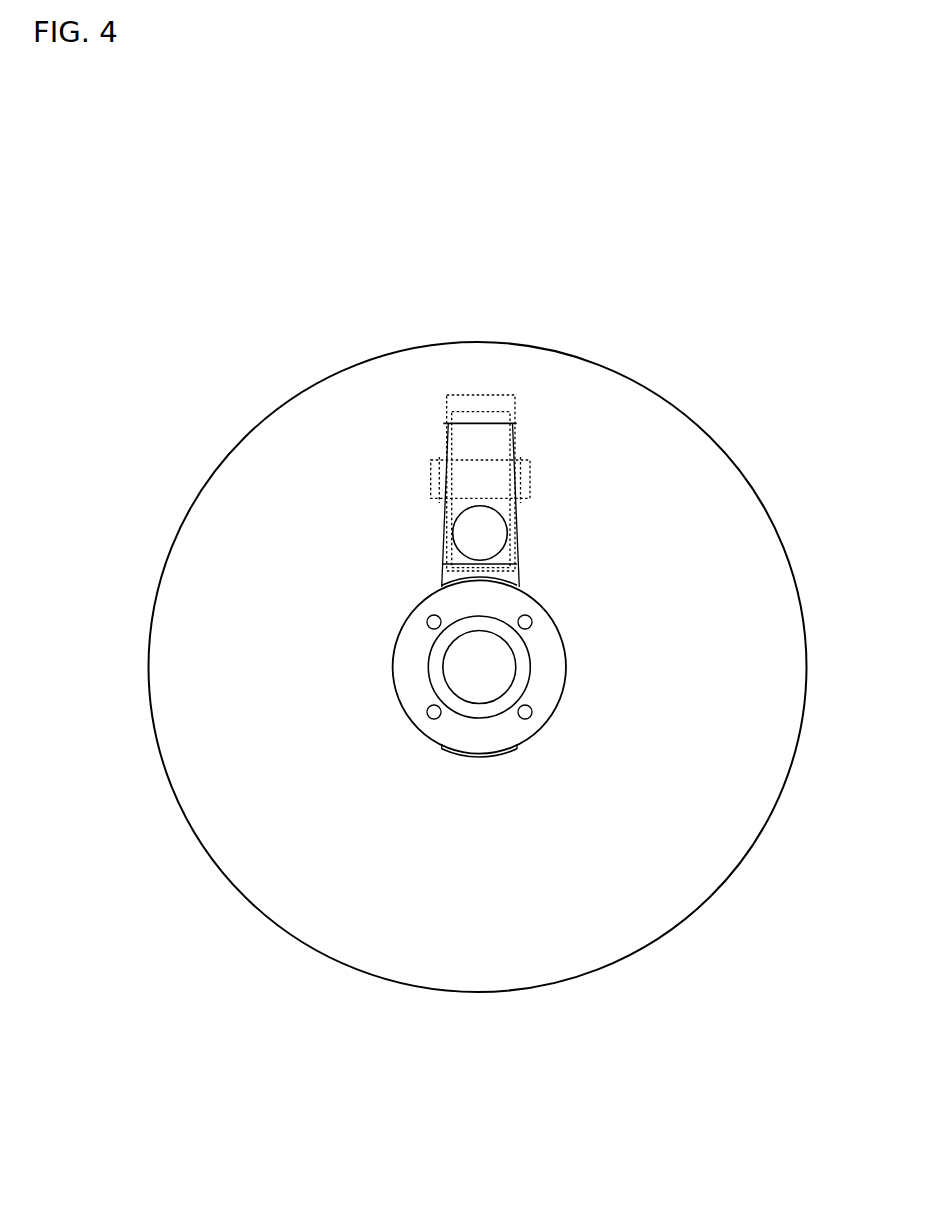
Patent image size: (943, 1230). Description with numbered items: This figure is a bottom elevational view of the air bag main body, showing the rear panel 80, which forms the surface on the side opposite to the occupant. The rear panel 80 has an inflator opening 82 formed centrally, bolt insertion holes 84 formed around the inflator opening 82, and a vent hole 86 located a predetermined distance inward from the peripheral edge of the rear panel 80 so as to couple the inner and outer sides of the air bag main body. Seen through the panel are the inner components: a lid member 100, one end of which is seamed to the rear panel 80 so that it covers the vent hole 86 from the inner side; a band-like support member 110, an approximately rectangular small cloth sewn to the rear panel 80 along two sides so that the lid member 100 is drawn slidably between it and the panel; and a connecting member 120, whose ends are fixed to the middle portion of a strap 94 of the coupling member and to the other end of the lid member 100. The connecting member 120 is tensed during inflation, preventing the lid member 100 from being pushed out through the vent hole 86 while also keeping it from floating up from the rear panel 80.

The rear panel 80 is at (693, 422).
The inflator opening 82 is at (509, 663).
The bolt insertion holes 84 is at (532, 622).
The vent hole 86 is at (480, 533).
The band-like straps 94 is at (474, 757).
The lid member 100 is at (485, 395).
The support member 110 is at (428, 489).
The connecting member 120 is at (505, 442).